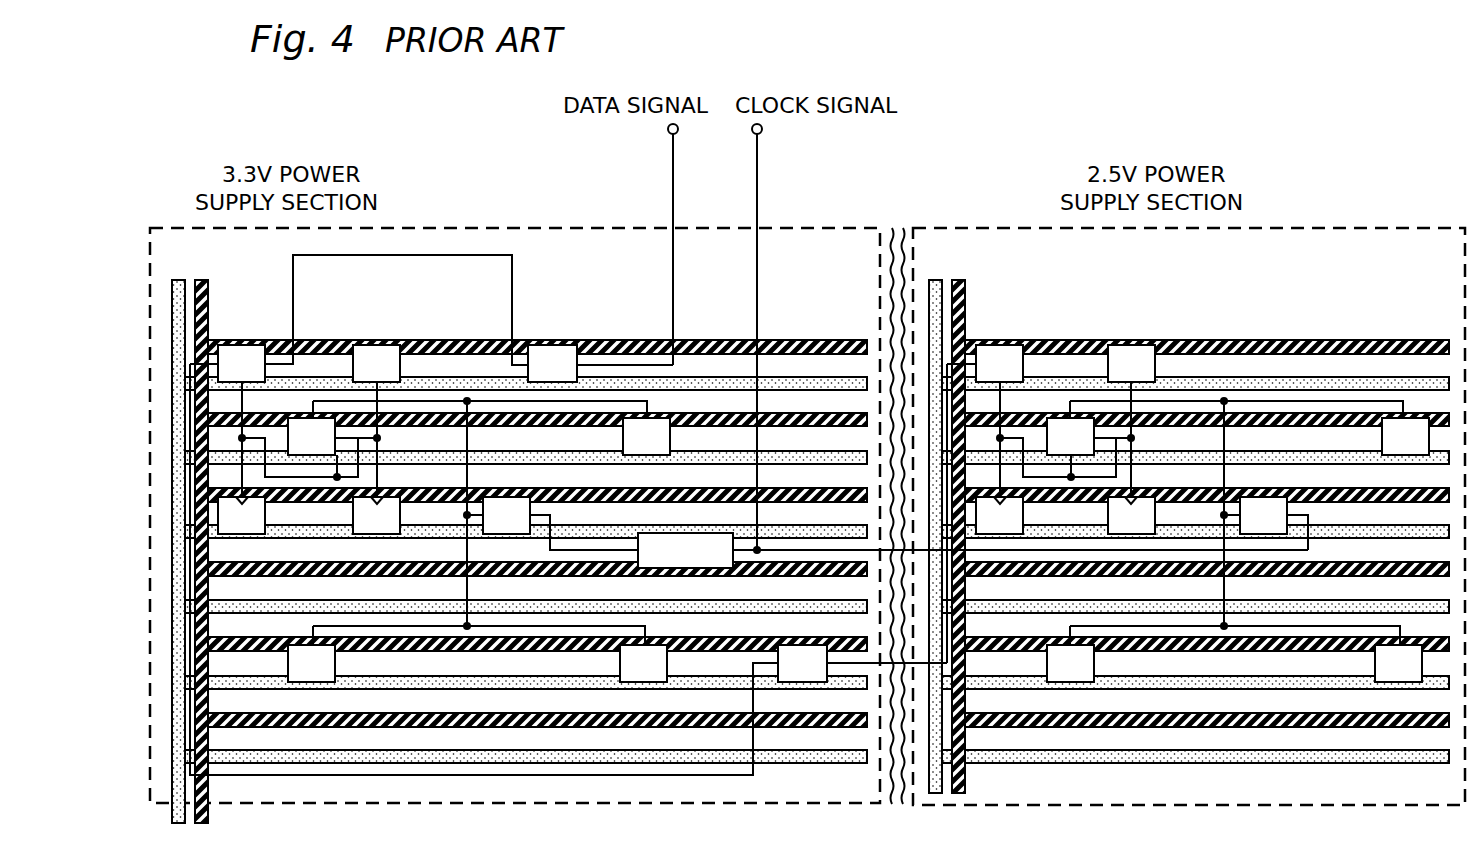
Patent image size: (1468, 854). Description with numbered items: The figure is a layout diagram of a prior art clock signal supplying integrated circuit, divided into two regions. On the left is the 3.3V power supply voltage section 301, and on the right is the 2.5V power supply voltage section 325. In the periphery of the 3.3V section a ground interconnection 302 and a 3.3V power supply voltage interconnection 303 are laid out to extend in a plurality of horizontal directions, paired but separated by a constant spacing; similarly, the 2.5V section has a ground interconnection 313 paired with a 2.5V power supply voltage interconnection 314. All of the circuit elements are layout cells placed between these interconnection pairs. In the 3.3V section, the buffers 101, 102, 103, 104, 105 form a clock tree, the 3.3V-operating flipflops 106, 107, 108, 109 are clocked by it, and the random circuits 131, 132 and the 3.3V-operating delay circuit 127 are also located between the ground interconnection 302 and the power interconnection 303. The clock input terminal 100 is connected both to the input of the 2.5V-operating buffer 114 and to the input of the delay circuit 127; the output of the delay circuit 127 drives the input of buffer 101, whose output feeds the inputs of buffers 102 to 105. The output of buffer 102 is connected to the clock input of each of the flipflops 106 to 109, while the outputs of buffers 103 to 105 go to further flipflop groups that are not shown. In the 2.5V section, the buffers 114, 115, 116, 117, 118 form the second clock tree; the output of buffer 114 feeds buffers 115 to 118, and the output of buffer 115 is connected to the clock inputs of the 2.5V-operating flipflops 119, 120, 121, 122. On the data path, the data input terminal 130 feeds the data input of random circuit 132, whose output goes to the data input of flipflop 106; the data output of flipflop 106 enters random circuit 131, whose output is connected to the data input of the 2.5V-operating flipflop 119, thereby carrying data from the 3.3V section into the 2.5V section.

The clock input terminal 100 is at (762, 134).
The data input terminal 130 is at (668, 134).
The 3.3V power supply voltage section 301 is at (441, 227).
The 2.5V power supply voltage section 325 is at (965, 227).
The ground interconnection 302 is at (177, 280).
The 3.3V power supply voltage interconnection 303 is at (203, 280).
The ground interconnection 313 is at (934, 280).
The 2.5V power supply voltage interconnection 314 is at (960, 280).
The 3.3V-operating flipflop 106 is at (247, 343).
The 3.3V-operating flipflop 107 is at (380, 343).
The 3.3V-operating flipflop 108 is at (250, 534).
The 3.3V-operating flipflop 109 is at (385, 534).
The 2.5V-operating flipflop 119 is at (1005, 343).
The 2.5V-operating flipflop 120 is at (1135, 343).
The 2.5V-operating flipflop 121 is at (1008, 534).
The 2.5V-operating flipflop 122 is at (1143, 534).
The 3.3V-operating buffer 101 is at (505, 534).
The 3.3V-operating buffer 102 is at (292, 415).
The 3.3V-operating buffer 103 is at (650, 455).
The 3.3V-operating buffer 104 is at (311, 682).
The 3.3V-operating buffer 105 is at (643, 682).
The 2.5V-operating buffer 114 is at (1263, 534).
The 2.5V-operating buffer 115 is at (1053, 415).
The 2.5V-operating buffer 116 is at (1408, 458).
The 2.5V-operating buffer 117 is at (1070, 682).
The 2.5V-operating buffer 118 is at (1398, 682).
The random circuit 132 is at (553, 343).
The random circuit 131 is at (805, 682).
The 3.3V-operating delay circuit 127 is at (690, 568).